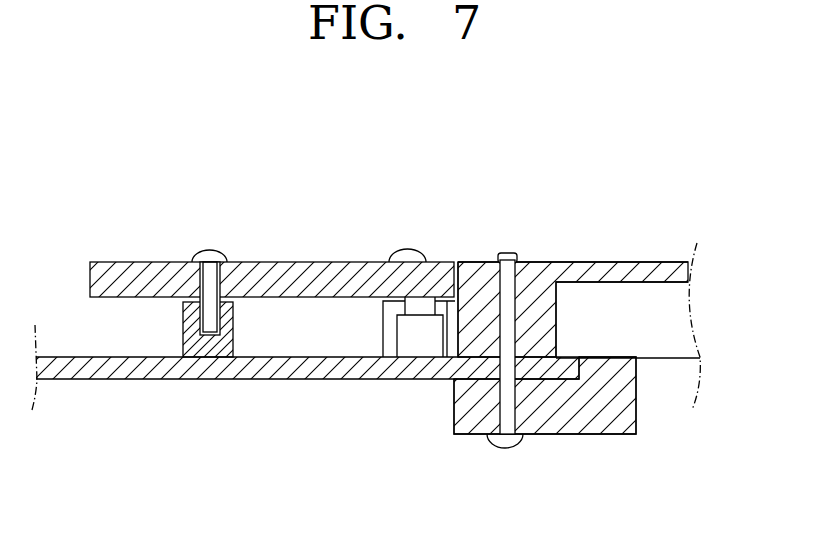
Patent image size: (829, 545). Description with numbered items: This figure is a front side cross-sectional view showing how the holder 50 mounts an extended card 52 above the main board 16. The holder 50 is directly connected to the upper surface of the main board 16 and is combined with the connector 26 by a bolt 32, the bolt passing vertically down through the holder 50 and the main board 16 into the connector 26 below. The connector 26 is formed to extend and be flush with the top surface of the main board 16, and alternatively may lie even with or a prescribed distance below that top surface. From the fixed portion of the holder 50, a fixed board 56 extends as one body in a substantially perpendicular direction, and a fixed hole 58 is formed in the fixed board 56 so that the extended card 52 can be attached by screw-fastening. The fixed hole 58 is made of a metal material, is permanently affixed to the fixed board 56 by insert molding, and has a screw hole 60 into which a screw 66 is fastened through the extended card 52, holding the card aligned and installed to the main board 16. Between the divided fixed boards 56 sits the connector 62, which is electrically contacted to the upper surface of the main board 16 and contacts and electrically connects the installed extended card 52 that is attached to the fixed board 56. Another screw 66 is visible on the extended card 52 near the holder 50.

The main board 16 is at (345, 370).
The connector 26 is at (573, 420).
The bolt 32 is at (503, 442).
The holder 50 is at (617, 262).
The extended card 52 is at (313, 262).
The fixed board 56 is at (447, 312).
The fixed hole 58 is at (193, 348).
The screw hole 60 is at (215, 305).
The connector 62 is at (420, 342).
The screw 66 is at (211, 250).